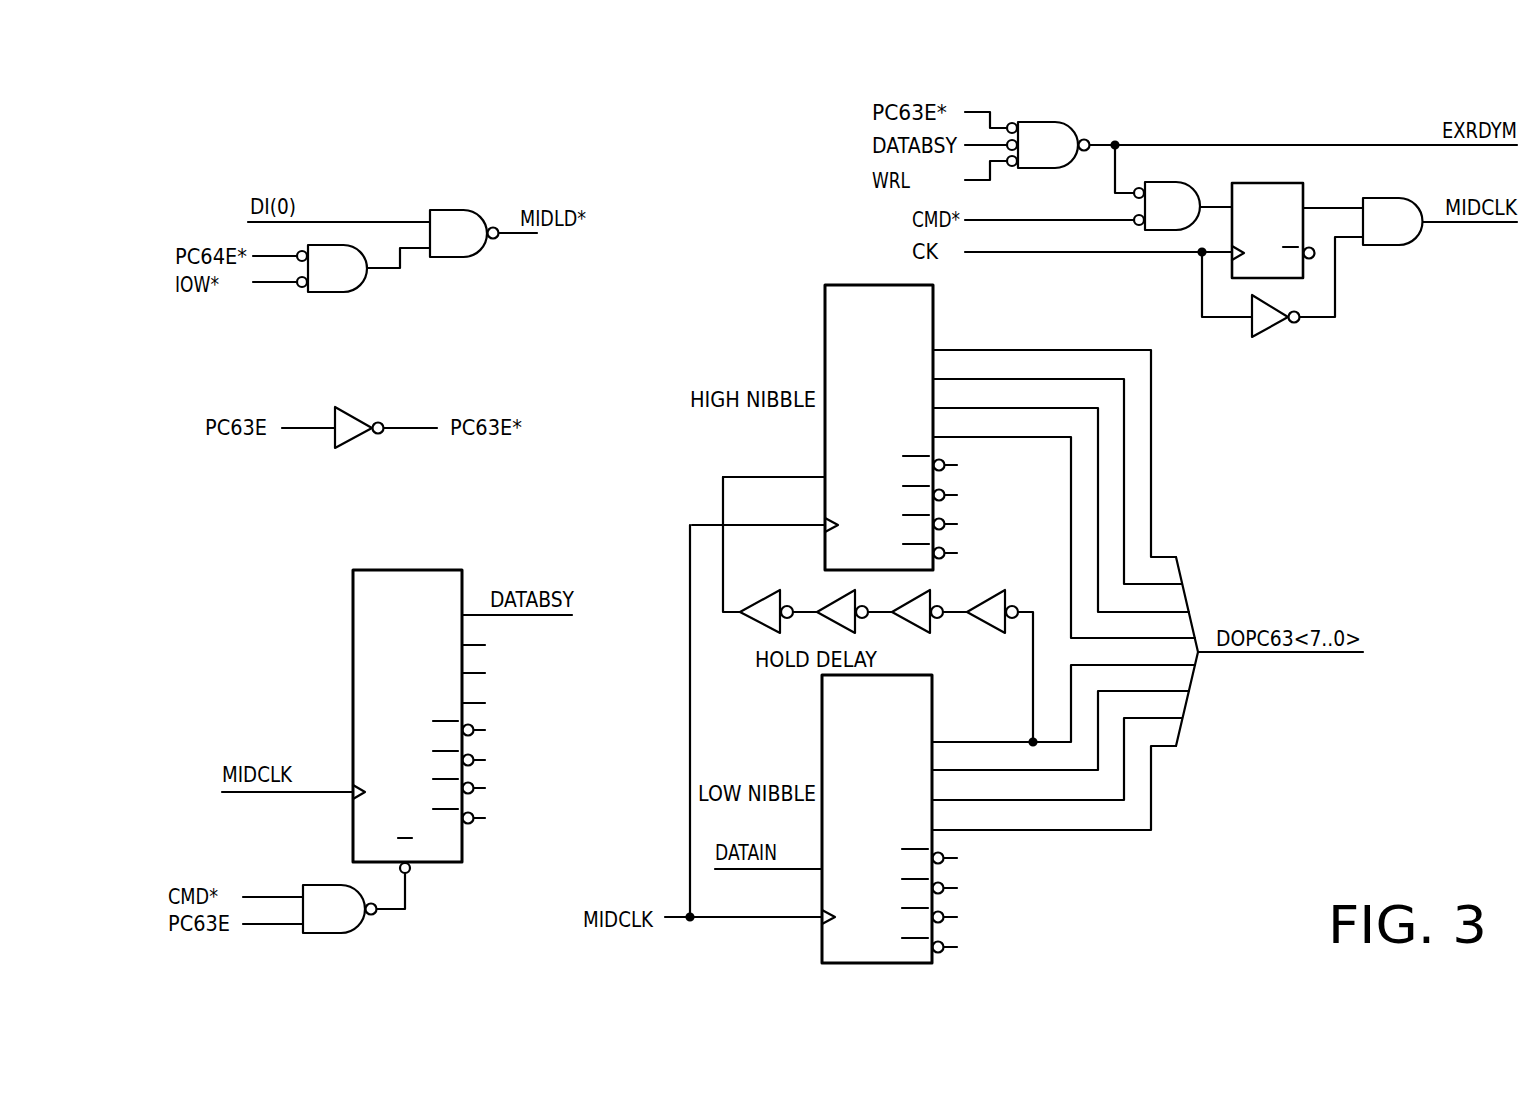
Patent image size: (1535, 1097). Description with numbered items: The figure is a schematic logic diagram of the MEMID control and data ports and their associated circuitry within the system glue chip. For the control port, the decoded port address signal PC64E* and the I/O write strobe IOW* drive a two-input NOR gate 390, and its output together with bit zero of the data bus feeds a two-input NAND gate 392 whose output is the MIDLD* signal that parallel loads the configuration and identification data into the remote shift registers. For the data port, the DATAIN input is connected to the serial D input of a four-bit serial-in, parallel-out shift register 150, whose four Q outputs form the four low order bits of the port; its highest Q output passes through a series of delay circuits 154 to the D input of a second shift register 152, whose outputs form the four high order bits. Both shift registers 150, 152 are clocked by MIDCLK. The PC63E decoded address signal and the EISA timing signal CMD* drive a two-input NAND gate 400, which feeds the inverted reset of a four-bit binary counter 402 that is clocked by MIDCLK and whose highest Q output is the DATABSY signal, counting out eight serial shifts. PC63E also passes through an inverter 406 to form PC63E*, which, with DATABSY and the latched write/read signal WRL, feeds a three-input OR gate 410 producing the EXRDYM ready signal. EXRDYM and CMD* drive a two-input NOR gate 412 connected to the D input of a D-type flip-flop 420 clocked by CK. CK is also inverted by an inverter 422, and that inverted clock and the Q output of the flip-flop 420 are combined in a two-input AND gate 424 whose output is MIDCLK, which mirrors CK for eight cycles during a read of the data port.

The shift register 150 is at (822, 734).
The second shift register 152 is at (825, 346).
The delay circuits 154 is at (983, 587).
The 2-input NOR gate 390 is at (340, 292).
The 2-input NAND gate 392 is at (470, 210).
The 2-input NAND gate 400 is at (340, 933).
The 4 bit binary counter 402 is at (410, 570).
The inverter 406 is at (362, 412).
The 3 input OR gate 410 is at (1062, 122).
The 2-input NOR gate 412 is at (1185, 182).
The D-type flip-flop 420 is at (1303, 192).
The inverter 422 is at (1278, 325).
The 2-input AND gate 424 is at (1395, 245).